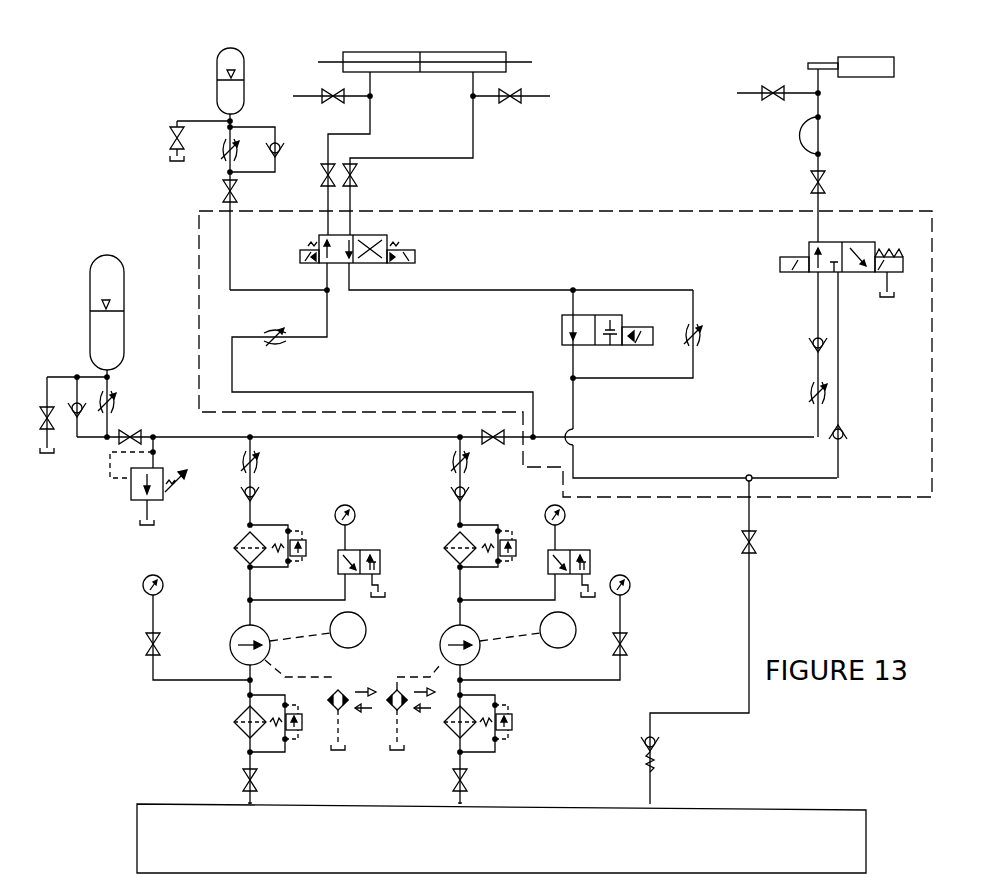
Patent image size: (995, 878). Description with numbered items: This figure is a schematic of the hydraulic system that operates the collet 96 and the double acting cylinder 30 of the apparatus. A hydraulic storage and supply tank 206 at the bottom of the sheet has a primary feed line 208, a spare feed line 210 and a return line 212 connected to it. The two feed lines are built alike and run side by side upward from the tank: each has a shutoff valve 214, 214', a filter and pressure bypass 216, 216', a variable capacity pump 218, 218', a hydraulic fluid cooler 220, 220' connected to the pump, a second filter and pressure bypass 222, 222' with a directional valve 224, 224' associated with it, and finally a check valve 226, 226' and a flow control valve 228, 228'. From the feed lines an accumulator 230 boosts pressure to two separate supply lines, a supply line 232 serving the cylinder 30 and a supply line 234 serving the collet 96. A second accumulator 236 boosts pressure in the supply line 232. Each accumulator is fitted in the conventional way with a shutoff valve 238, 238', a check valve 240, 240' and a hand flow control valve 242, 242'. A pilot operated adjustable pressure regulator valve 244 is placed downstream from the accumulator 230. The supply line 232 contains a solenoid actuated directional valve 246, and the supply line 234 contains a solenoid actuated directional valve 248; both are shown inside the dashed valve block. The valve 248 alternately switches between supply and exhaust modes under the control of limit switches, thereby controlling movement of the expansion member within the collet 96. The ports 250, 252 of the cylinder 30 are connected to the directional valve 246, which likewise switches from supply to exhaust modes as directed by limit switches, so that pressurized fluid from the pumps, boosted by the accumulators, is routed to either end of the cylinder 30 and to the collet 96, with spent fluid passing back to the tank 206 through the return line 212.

The double acting cylinder 30 is at (440, 52).
The collet 96 is at (850, 78).
The hydraulic storage and supply tank 206 is at (712, 810).
The primary feed line 208 is at (248, 803).
The spare feed line 210 is at (458, 803).
The return line 212 is at (751, 610).
The shutoff valve 214 is at (272, 784).
The shutoff valve 214' is at (486, 784).
The filter and pressure bypass 216 is at (246, 724).
The filter and pressure bypass 216' is at (463, 727).
The variable capacity pump 218 is at (279, 638).
The variable capacity pump 218' is at (485, 638).
The hydraulic fluid cooler 220 is at (324, 705).
The hydraulic fluid cooler 220' is at (395, 707).
The second filter and pressure bypass 222 is at (248, 552).
The second filter and pressure bypass 222' is at (458, 552).
The directional valve 224 is at (328, 552).
The directional valve 224' is at (547, 552).
The check valve 226 is at (279, 502).
The check valve 226' is at (485, 502).
The flow control valve 228 is at (271, 458).
The flow control valve 228' is at (432, 458).
The accumulator 230 is at (90, 286).
The supply line 232 is at (336, 392).
The supply line 234 is at (668, 442).
The accumulator 236 is at (217, 58).
The shutoff valve 238 is at (47, 429).
The shutoff valve 238' is at (166, 141).
The check valve 240 is at (83, 432).
The check valve 240' is at (278, 143).
The hand flow control valve 242 is at (129, 399).
The hand flow control valve 242' is at (202, 155).
The pilot operated adjustable pressure regulator valve 244 is at (167, 502).
The solenoid actuated directional valve 246 is at (380, 238).
The solenoid actuated directional valve 248 is at (800, 256).
The port 250 is at (372, 74).
The port 252 is at (472, 78).